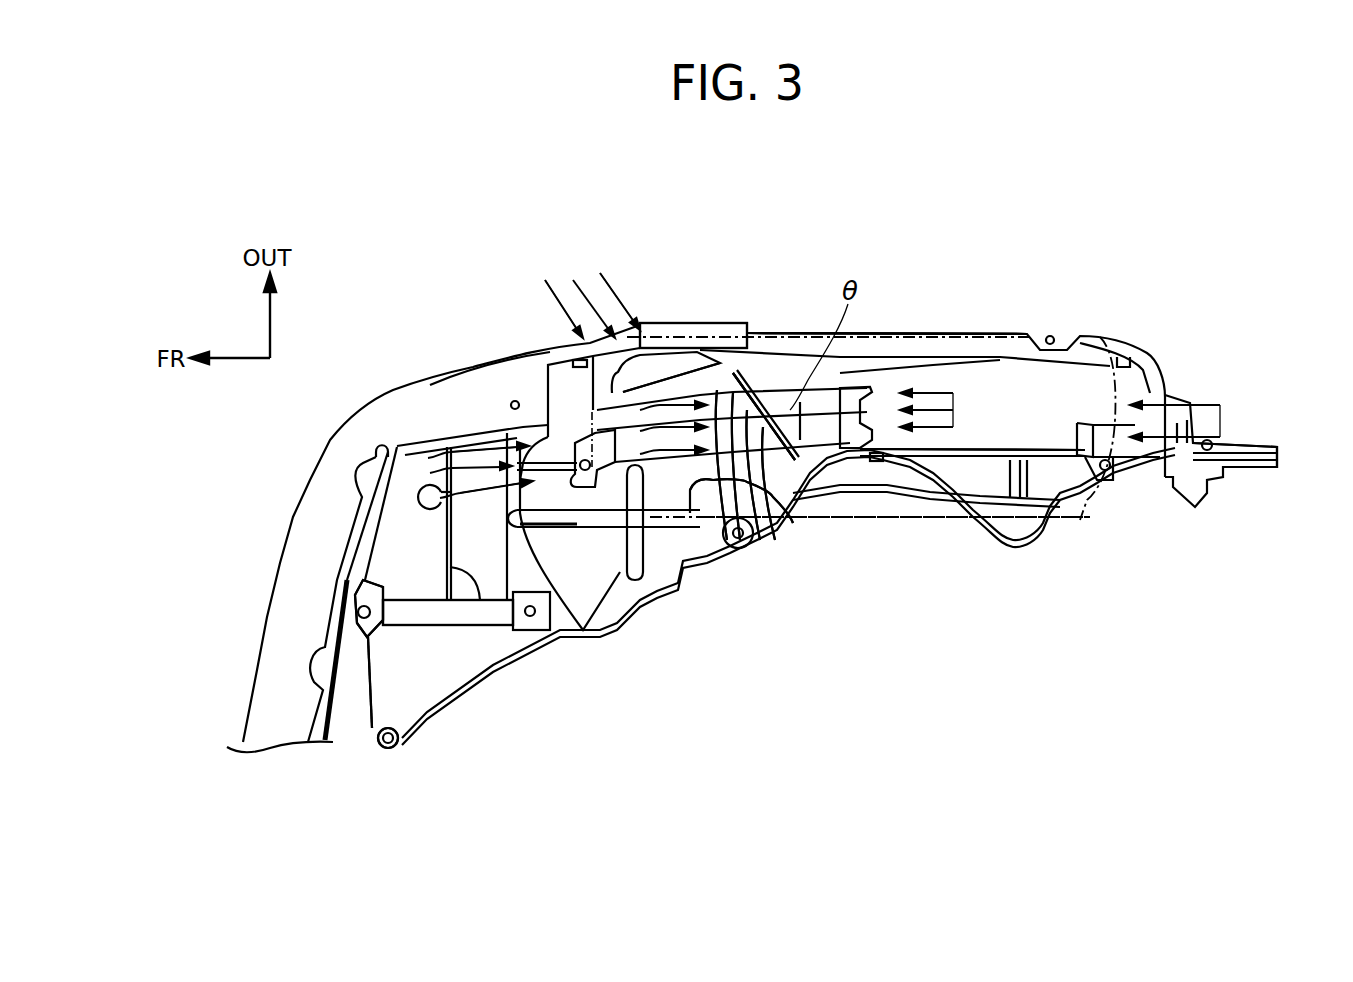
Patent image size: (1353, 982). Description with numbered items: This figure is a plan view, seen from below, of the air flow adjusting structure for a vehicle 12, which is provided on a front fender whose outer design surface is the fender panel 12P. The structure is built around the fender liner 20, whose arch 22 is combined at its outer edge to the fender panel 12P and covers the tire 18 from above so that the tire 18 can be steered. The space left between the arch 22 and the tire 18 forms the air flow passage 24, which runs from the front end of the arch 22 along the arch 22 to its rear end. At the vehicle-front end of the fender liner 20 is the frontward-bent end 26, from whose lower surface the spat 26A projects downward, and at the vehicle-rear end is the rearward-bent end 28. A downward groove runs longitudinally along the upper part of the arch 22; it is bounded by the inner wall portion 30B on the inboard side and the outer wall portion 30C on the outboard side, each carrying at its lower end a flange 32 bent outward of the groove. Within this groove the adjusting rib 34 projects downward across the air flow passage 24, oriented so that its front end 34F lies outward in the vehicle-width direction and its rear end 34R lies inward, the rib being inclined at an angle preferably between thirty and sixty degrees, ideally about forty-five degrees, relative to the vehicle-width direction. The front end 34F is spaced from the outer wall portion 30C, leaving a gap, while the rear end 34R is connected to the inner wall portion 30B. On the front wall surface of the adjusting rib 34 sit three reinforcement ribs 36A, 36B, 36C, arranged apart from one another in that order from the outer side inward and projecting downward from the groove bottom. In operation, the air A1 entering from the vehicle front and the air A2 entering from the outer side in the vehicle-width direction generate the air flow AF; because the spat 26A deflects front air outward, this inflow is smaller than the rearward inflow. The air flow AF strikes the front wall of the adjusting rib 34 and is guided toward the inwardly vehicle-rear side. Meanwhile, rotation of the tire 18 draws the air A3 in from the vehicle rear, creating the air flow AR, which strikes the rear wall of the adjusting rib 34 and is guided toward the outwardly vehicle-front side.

The air flow adjusting structure for a vehicle 12 is at (886, 258).
The fender panel 12P is at (670, 323).
The tire 18 is at (932, 520).
The fender liner 20 is at (942, 328).
The arch 22 is at (887, 335).
The air flow passage 24 is at (1019, 423).
The frontward-bent end 26 is at (413, 580).
The spat 26A is at (463, 578).
The rearward-bent end 28 is at (1259, 445).
The inner wall portion 30B is at (780, 473).
The outer wall portion 30C is at (722, 366).
The flange 32 is at (713, 450).
The adjusting rib 34 is at (780, 405).
The front end 34F is at (768, 398).
The rear end 34R is at (845, 462).
The reinforcement rib 36A is at (727, 500).
The reinforcement rib 36B is at (732, 500).
The reinforcement rib 36C is at (742, 500).
The air A1 is at (483, 473).
The air A2 is at (612, 283).
The air A3 is at (1222, 440).
The air flow AF is at (657, 405).
The air flow AR is at (957, 395).